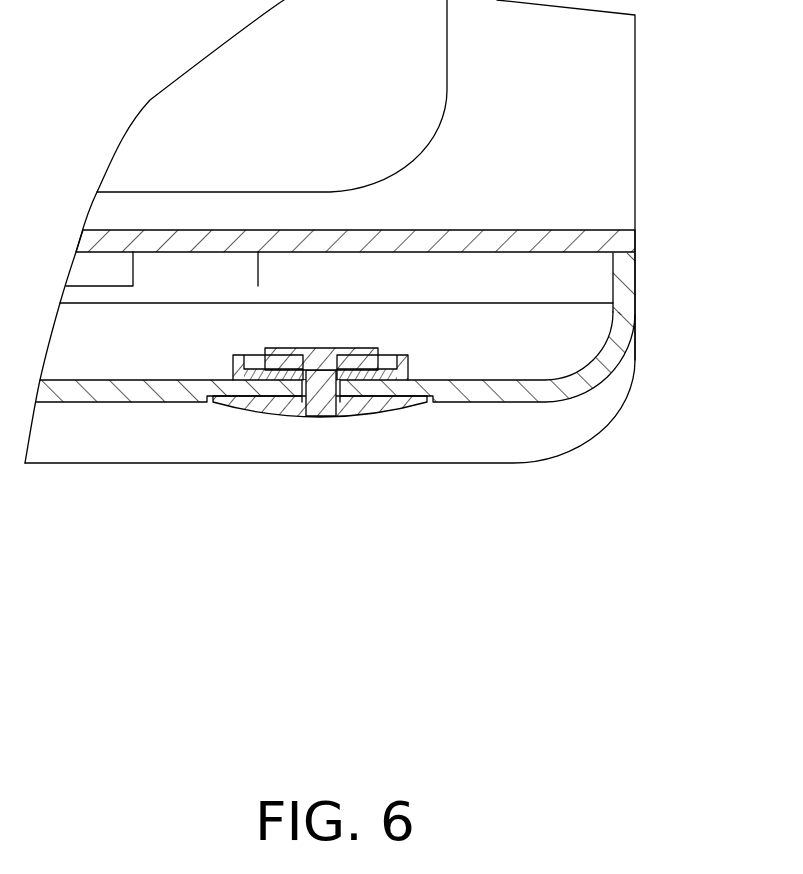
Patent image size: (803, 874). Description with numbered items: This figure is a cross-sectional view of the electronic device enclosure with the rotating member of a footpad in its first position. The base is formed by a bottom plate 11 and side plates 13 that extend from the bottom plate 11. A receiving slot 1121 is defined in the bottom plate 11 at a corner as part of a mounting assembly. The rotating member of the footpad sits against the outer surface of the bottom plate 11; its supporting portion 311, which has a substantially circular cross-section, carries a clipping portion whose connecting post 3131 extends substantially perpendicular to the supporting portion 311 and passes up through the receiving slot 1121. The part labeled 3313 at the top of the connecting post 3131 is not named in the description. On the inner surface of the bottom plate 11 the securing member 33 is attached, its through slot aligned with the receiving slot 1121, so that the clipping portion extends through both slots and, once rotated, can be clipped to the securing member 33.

The bottom plate 11 is at (134, 395).
The side plate 13 is at (620, 291).
The receiving slot 1121 is at (325, 415).
The supporting portion 311 is at (283, 412).
The connecting post 3131 is at (317, 398).
The head of fastener 3313 is at (363, 353).
The securing member 33 is at (408, 363).